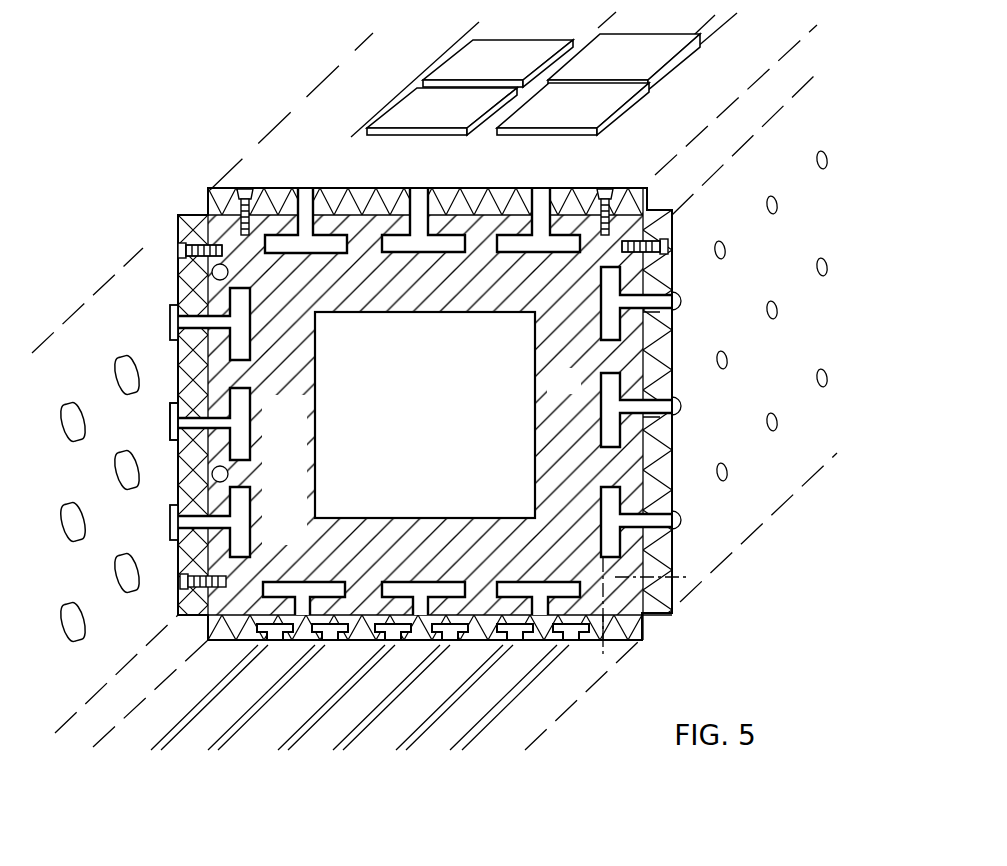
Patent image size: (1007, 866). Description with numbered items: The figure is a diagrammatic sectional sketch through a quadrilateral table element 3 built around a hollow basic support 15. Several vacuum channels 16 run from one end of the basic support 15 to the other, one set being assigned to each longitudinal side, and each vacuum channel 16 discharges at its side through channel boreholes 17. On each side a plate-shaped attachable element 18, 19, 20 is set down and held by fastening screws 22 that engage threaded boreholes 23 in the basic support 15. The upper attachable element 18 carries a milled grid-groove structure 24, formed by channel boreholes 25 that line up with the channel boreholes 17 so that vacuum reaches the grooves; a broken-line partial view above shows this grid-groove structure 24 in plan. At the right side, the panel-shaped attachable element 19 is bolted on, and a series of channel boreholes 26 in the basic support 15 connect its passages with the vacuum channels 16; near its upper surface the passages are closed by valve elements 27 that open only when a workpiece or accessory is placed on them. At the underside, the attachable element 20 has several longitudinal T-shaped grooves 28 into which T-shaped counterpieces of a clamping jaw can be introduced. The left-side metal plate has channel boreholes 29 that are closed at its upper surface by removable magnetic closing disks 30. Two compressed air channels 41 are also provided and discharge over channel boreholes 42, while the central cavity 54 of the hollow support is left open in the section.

The table element 3 is at (708, 490).
The basic support 15 is at (628, 645).
The vacuum channel 16 is at (490, 257).
The channel borehole 17 is at (318, 232).
The attachable element 18 is at (270, 188).
The attachable element 19 is at (675, 228).
The attachable element 20 is at (603, 648).
The fastening screw 22 is at (610, 188).
The threaded borehole 23 is at (650, 195).
The grid-groove structure 24 is at (628, 30).
The channel borehole 25 is at (305, 192).
The channel borehole 26 is at (665, 310).
The valve element 27 is at (775, 197).
The T-shaped groove 28 is at (400, 642).
The channel borehole 29 is at (173, 428).
The magnetic closing disk 30 is at (78, 404).
The compressed air channel 41 is at (228, 272).
The channel borehole 42 is at (172, 315).
The chip cavity 54 is at (440, 407).